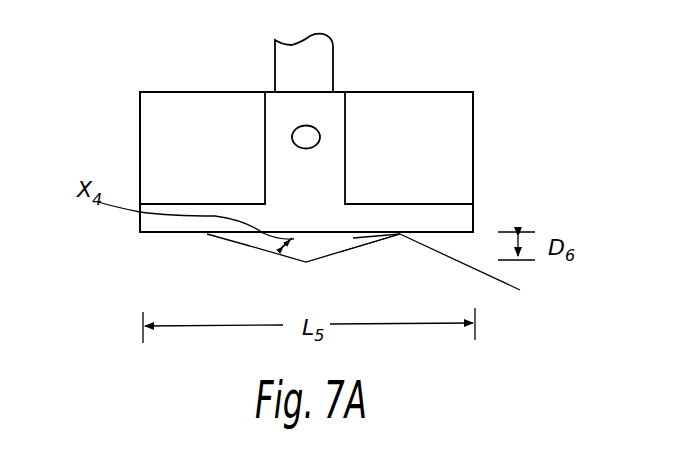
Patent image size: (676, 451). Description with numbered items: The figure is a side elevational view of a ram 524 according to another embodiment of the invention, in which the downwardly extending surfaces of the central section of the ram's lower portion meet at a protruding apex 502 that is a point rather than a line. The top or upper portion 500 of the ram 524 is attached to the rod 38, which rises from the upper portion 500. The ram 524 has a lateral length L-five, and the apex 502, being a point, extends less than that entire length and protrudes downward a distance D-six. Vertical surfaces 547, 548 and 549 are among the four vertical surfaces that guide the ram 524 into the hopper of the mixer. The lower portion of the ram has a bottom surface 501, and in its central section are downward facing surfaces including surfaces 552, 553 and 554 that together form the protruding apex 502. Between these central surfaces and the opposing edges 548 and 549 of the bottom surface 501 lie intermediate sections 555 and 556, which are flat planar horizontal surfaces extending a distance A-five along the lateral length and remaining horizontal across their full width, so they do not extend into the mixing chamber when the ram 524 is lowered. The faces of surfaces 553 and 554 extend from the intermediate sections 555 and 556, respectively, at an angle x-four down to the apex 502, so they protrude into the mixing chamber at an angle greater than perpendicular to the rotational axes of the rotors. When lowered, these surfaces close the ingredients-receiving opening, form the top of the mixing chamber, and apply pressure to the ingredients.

The rod 38 is at (275, 55).
The upper portion 500 is at (407, 91).
The bottom surface 501 is at (153, 232).
The protruding apex 502 is at (306, 262).
The ram 524 is at (168, 88).
The vertical surface 547 is at (445, 218).
The vertical surface 548 is at (473, 127).
The vertical surface 549 is at (140, 132).
The downward facing surface 552 is at (479, 276).
The downward facing surface 553 is at (240, 233).
The downward facing surface 554 is at (368, 243).
The intermediate section 555 is at (460, 232).
The intermediate section 556 is at (170, 234).